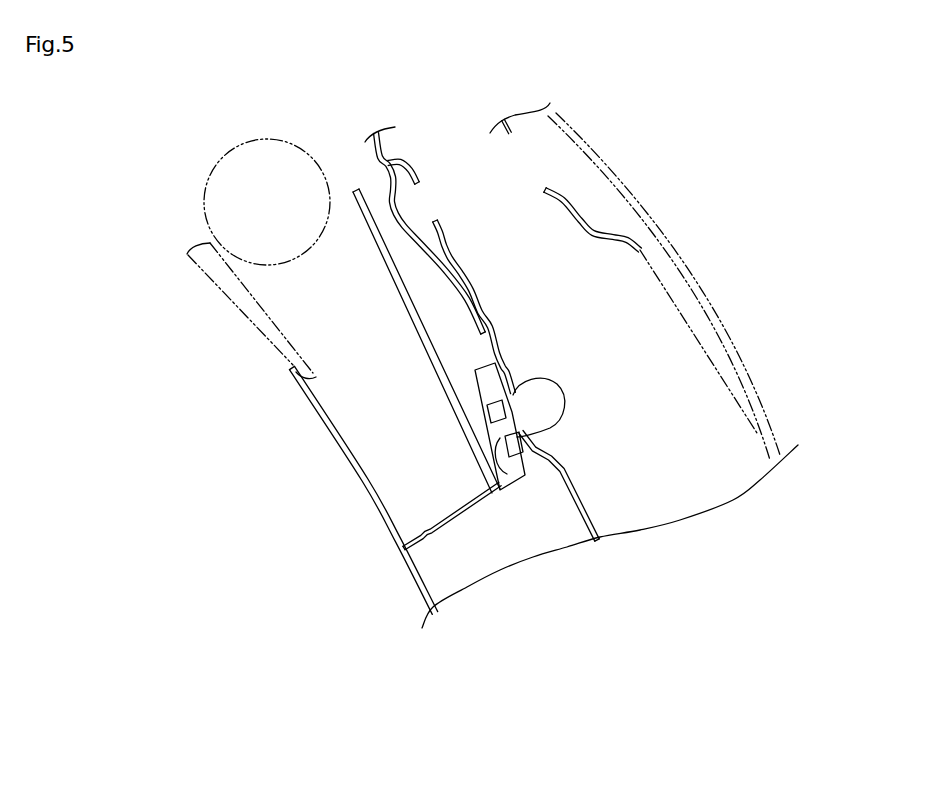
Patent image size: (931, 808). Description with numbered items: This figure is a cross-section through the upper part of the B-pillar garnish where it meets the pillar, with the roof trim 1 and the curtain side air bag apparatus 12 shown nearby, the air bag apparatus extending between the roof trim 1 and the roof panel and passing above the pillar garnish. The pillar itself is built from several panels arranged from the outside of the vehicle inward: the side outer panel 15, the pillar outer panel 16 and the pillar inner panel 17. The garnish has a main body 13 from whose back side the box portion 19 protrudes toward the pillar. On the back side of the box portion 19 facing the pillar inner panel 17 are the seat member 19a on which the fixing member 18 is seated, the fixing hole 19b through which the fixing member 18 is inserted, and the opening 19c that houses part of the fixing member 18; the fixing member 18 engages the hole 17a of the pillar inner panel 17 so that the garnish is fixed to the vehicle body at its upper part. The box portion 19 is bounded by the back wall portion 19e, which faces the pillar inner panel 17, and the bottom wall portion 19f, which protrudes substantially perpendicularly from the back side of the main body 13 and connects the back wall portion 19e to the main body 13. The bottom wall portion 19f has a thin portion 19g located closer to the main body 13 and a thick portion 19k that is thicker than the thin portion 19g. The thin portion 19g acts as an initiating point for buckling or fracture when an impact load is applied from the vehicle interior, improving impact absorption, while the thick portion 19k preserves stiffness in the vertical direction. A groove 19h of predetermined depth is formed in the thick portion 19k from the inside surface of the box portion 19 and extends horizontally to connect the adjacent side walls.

The roof trim 1 is at (225, 290).
The curtain side air bag apparatus 12 is at (248, 160).
The main body 13 is at (420, 585).
The side outer panel 15 is at (622, 190).
The pillar outer panel 16 is at (757, 433).
The pillar inner panel 17 is at (460, 278).
The hole 17a is at (518, 392).
The fixing member 18 is at (543, 388).
The box portion 19 is at (388, 433).
The seat member 19a is at (500, 353).
The fixing hole 19b is at (513, 485).
The opening 19c is at (473, 392).
The back wall portion 19e is at (428, 354).
The bottom wall portion 19f is at (483, 505).
The thin portion 19g is at (390, 535).
The groove 19h is at (432, 534).
The thick portion 19k is at (445, 517).